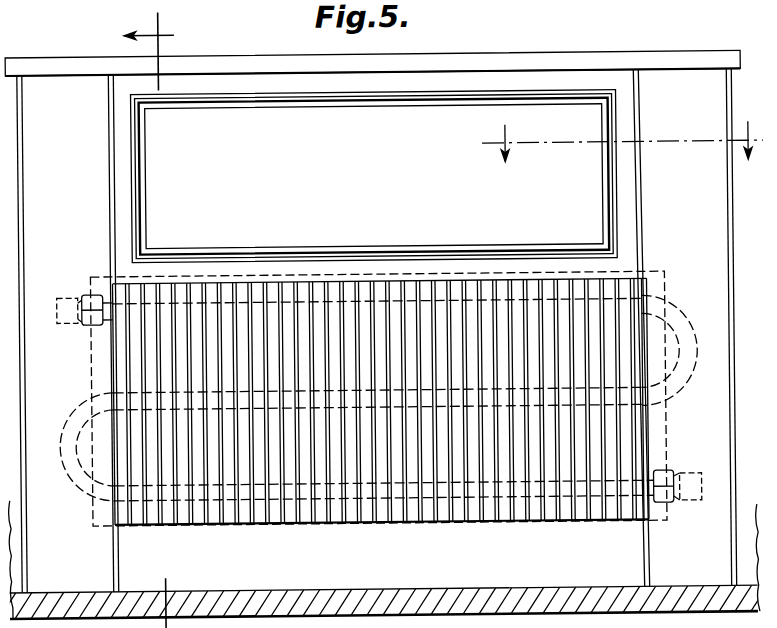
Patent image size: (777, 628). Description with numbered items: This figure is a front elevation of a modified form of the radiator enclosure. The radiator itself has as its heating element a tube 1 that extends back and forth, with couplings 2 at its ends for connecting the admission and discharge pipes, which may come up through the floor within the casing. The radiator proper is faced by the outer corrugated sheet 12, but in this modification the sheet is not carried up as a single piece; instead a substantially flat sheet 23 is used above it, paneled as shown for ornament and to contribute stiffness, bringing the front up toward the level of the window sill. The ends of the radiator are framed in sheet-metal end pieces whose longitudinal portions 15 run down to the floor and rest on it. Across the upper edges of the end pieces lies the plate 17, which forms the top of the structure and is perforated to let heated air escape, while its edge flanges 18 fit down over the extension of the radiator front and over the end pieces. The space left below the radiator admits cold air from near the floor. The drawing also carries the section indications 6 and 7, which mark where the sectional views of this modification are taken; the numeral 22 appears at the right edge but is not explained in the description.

The tube 1 is at (110, 337).
The couplings 2 is at (64, 322).
The section line 6- 6 is at (623, 162).
The section line 7- 7 is at (162, 320).
The outer corrugated sheet 12 is at (619, 442).
The longitudinal portions 15 is at (670, 328).
The plate 17 is at (469, 56).
The edge flanges 18 is at (751, 323).
The side panel 22 is at (765, 415).
The flat sheet 23 is at (624, 193).